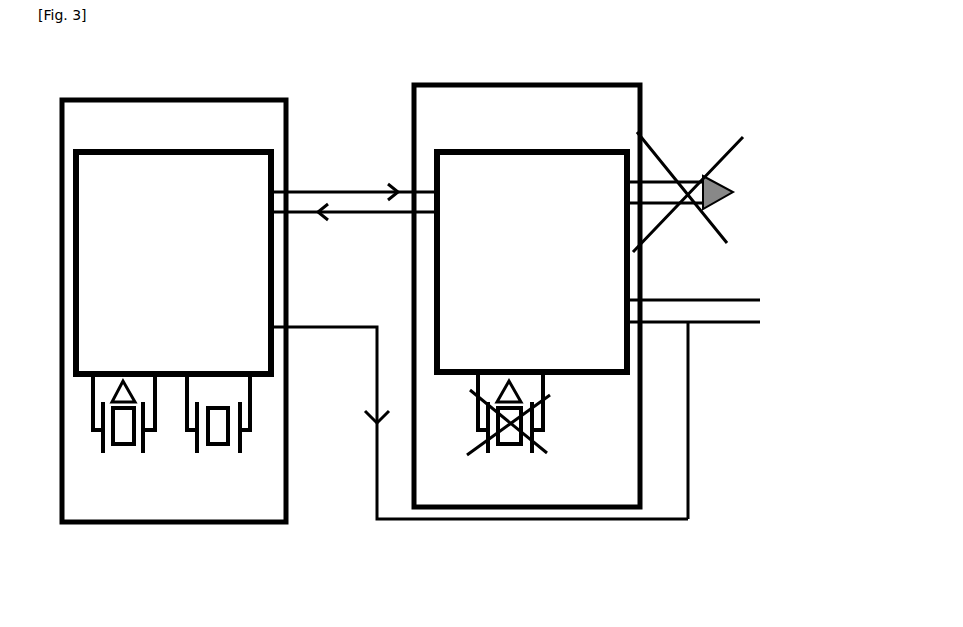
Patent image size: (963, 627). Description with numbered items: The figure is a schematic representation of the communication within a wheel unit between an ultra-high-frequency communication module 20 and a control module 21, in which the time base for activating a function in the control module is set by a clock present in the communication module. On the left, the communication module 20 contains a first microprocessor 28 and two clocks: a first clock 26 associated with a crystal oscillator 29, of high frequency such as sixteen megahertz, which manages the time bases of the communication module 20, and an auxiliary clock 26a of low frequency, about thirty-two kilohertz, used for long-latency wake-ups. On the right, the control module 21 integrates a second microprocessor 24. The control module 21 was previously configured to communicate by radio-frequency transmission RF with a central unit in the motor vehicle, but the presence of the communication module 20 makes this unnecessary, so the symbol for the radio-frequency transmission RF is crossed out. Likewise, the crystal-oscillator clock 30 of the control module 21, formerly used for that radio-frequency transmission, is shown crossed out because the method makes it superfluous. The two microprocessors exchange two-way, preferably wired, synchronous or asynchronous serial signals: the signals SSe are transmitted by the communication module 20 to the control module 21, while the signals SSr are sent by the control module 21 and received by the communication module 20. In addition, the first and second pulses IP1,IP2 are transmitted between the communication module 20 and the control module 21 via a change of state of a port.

The communication module 20 is at (289, 523).
The first microprocessor 28 is at (186, 291).
The first clock 26 is at (122, 428).
The crystal oscillator 29 is at (136, 401).
The auxiliary clock 26a is at (213, 428).
The control module 21 is at (497, 508).
The second microprocessor 24 is at (545, 291).
The crystal-oscillator clock 30 is at (545, 447).
The radio-frequency transmission RF is at (697, 192).
The synchronous or asynchronous serial signals transmitted SSe is at (333, 190).
The synchronous or asynchronous serial signals received SSr is at (372, 210).
The first and second pulses IP1,IP2 is at (693, 453).